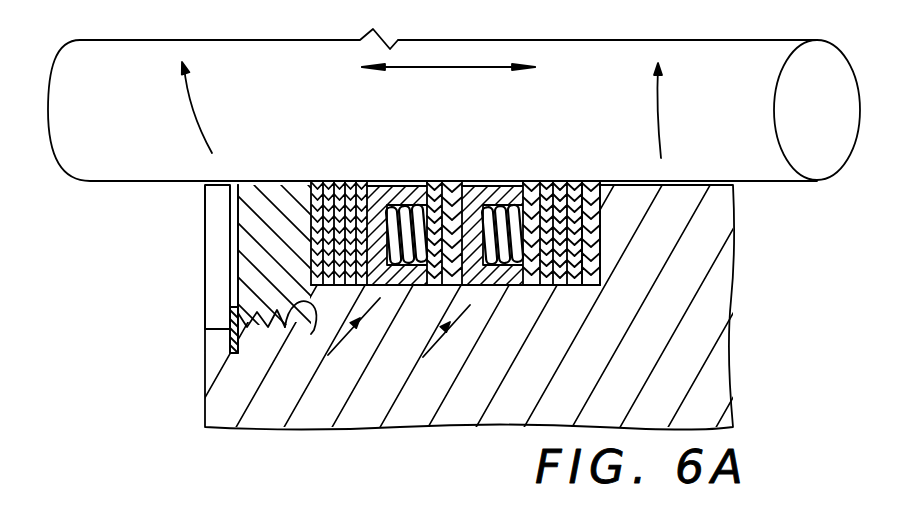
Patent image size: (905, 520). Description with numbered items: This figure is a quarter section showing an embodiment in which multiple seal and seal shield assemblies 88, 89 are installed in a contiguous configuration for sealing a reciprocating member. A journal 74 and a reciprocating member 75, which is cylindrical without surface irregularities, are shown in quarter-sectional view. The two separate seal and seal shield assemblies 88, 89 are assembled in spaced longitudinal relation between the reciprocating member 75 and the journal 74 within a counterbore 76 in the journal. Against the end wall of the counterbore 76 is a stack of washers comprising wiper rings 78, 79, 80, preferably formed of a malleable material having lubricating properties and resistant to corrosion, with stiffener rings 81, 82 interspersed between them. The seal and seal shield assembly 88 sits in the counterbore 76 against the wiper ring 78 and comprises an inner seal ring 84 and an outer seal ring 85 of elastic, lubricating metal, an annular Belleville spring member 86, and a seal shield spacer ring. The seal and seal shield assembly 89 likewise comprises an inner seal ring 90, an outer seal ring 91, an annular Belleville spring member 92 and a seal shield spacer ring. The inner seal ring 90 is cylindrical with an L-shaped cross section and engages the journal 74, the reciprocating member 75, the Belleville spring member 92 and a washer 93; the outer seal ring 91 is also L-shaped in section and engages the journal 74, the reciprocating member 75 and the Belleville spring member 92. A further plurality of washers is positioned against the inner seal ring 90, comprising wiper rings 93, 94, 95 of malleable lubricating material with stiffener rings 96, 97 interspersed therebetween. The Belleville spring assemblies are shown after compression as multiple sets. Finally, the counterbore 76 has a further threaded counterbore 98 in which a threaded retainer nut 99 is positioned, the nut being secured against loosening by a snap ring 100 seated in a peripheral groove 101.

The journal 74 is at (712, 390).
The reciprocating member 75 is at (757, 160).
The counterbore 76 is at (601, 242).
The wiper ring 78 is at (550, 288).
The wiper ring 79 is at (569, 288).
The wiper ring 80 is at (592, 288).
The stiffener ring 81 is at (559, 186).
The stiffener ring 82 is at (583, 186).
The inner seal ring 84 is at (507, 186).
The outer seal ring 85 is at (488, 290).
The annular Belleville spring member 86 is at (538, 288).
The seal and seal shield assembly 88 is at (429, 348).
The seal and seal shield assembly 89 is at (337, 343).
The inner seal ring 90 is at (385, 186).
The outer seal ring 91 is at (428, 287).
The annular Belleville spring member 92 is at (413, 185).
The wiper ring 93 is at (358, 181).
The wiper ring 94 is at (333, 181).
The wiper ring 95 is at (311, 181).
The stiffener ring 96 is at (343, 181).
The stiffener ring 97 is at (320, 181).
The threaded counterbore 98 is at (296, 331).
The threaded retainer nut 99 is at (268, 243).
The snap ring 100 is at (230, 310).
The peripheral groove 101 is at (236, 355).